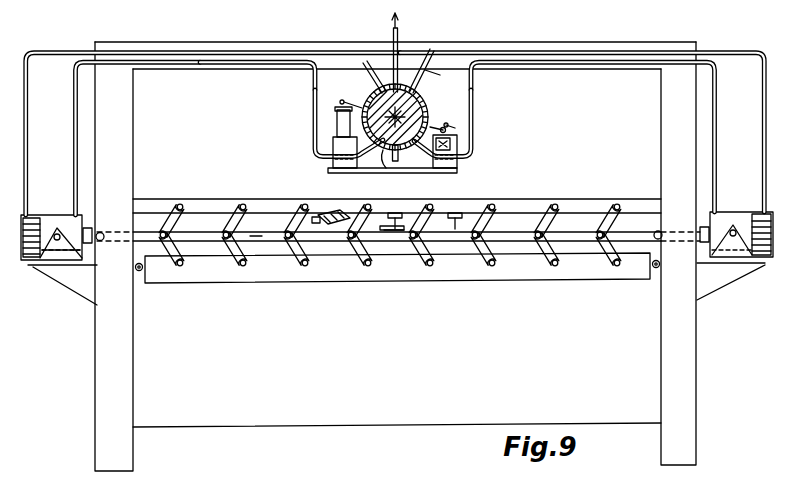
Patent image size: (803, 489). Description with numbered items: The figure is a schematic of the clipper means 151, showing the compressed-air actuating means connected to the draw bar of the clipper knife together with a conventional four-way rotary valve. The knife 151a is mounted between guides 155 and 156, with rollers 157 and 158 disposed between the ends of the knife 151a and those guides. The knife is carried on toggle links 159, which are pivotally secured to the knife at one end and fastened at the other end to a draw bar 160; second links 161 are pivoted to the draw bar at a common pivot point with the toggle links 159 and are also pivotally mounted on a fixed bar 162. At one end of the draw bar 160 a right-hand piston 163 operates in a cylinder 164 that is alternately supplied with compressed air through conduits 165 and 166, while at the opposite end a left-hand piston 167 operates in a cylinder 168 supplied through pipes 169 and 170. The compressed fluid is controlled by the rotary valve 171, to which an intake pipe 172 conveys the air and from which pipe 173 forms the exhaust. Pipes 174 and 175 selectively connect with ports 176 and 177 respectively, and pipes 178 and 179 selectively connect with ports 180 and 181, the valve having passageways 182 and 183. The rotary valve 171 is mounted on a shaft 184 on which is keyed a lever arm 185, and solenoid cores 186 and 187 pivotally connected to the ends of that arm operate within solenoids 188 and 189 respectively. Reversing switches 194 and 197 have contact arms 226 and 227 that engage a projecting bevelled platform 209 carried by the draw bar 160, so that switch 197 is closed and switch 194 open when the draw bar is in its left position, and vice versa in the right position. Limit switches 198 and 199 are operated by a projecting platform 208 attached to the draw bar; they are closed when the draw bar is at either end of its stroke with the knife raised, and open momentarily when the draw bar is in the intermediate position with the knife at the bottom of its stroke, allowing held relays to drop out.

The clipper means 151 is at (377, 328).
The knife 151a is at (228, 276).
The guide 155 is at (661, 367).
The guide 156 is at (133, 389).
The roller 157 is at (654, 270).
The roller 158 is at (140, 272).
The toggle links 159 is at (183, 262).
The draw bar 160 is at (638, 233).
The second links 161 is at (232, 222).
The fixed bar 162 is at (587, 200).
The piston 163 is at (733, 200).
The cylinder 164 is at (752, 218).
The conduit 165 is at (718, 113).
The conduit 166 is at (764, 141).
The piston 167 is at (33, 213).
The cylinder 168 is at (62, 221).
The pipe 169 is at (27, 150).
The pipe 170 is at (73, 165).
The rotary valve 171 is at (445, 103).
The intake pipe 172 is at (392, 35).
The pipe 173 is at (398, 163).
The pipe 174 is at (425, 74).
The pipe 175 is at (350, 74).
The port 176 is at (417, 98).
The port 177 is at (378, 98).
The pipe 178 is at (474, 102).
The pipe 179 is at (313, 128).
The port 180 is at (458, 126).
The port 181 is at (357, 140).
The passageway 182 is at (402, 70).
The passageway 183 is at (386, 168).
The shaft 184 is at (429, 111).
The lever arm 185 is at (455, 124).
The solenoid core 186 is at (457, 142).
The solenoid core 187 is at (337, 116).
The solenoid 188 is at (457, 164).
The solenoid 189 is at (335, 166).
The reversing switch 194 is at (460, 208).
The reversing switch 197 is at (410, 205).
The limit switch 198 is at (312, 221).
The limit switch 199 is at (346, 213).
The projecting platform 208 is at (258, 237).
The projecting bevelled platform 209 is at (396, 238).
The contact arm 226 is at (460, 221).
The contact arm 227 is at (397, 231).